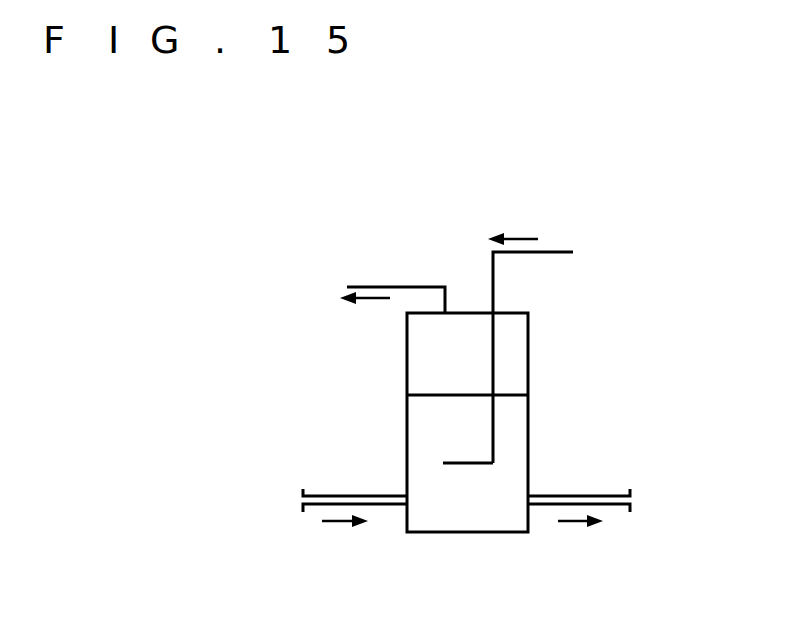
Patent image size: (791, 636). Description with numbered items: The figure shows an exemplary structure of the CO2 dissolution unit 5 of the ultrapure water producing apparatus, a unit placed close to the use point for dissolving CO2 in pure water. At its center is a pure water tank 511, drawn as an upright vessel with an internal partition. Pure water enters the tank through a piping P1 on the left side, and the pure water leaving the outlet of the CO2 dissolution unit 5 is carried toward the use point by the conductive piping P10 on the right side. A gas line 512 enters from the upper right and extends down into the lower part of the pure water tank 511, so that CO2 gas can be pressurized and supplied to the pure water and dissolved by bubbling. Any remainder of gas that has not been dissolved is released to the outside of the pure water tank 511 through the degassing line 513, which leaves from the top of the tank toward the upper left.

The CO2 dissolution unit 5 is at (468, 278).
The pure water tank 511 is at (528, 355).
The gas line 512 is at (562, 252).
The degassing line 513 is at (388, 287).
The piping P1 is at (350, 496).
The conductive piping P10 is at (588, 496).